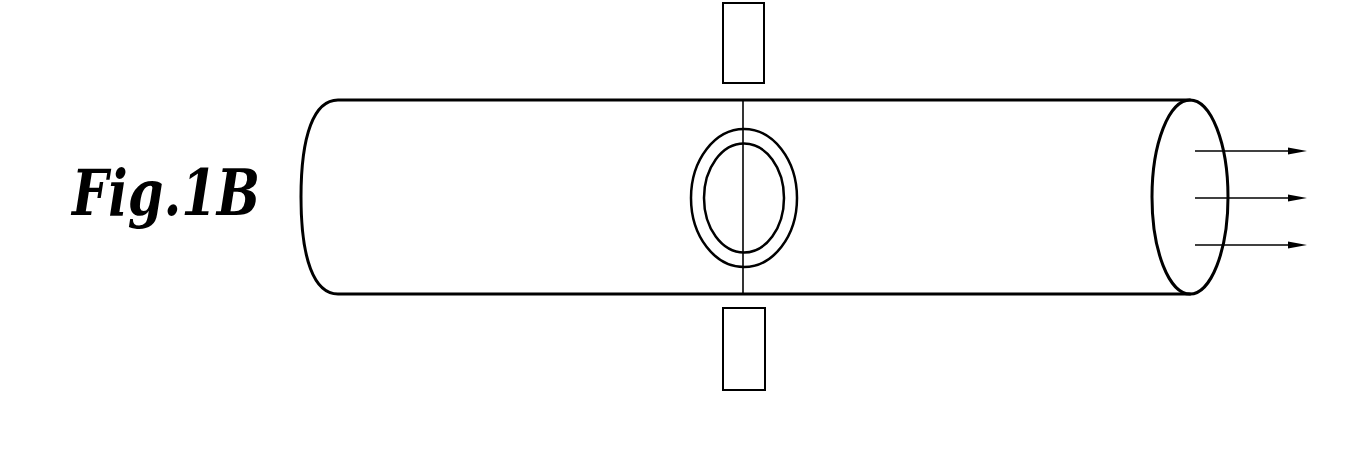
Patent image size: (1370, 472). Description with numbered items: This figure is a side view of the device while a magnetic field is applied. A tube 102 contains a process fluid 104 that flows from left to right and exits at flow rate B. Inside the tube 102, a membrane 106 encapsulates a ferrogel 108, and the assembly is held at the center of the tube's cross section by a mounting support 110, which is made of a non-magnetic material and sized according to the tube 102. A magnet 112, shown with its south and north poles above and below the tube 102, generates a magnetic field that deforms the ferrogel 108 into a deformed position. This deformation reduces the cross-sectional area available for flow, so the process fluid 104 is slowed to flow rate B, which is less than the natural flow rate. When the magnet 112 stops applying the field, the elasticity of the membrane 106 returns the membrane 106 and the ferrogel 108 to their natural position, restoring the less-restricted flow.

The tube 102 is at (422, 99).
The process fluid 104 is at (1033, 220).
The membrane 106 is at (796, 196).
The ferrogel 108 is at (758, 170).
The mounting support 110 is at (742, 208).
The magnet 112 is at (765, 44).